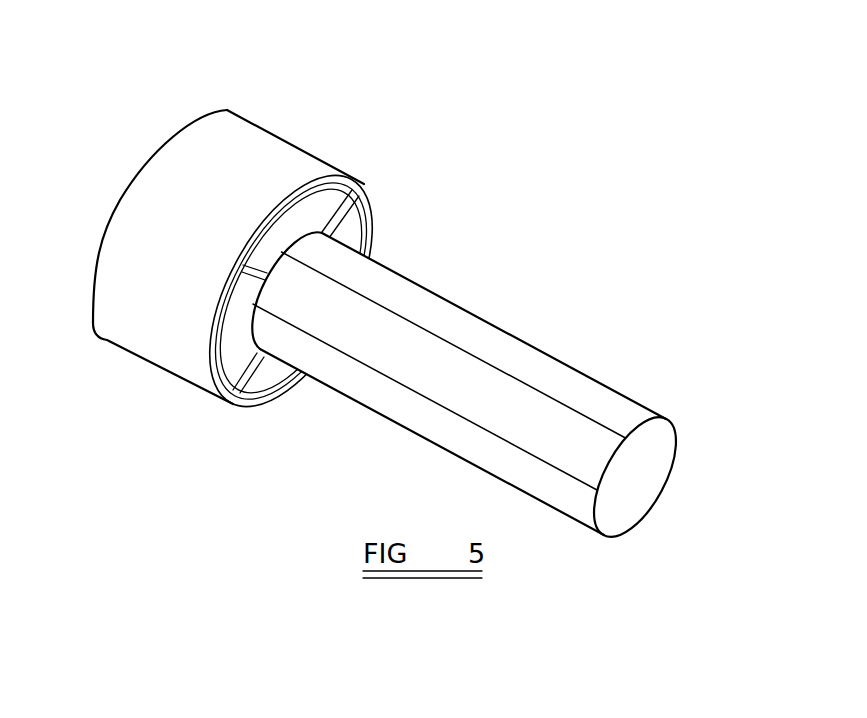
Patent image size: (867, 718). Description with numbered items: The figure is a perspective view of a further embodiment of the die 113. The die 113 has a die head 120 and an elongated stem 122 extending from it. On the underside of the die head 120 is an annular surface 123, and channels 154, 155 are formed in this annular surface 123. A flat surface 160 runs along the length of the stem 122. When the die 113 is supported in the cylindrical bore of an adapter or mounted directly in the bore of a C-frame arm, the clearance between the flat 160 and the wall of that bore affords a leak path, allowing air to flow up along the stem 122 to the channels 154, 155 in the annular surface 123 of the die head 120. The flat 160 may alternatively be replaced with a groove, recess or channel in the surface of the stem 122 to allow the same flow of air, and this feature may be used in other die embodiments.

The die 113 is at (522, 270).
The die head 120 is at (172, 150).
The stem 122 is at (658, 453).
The annular surface 123 is at (352, 177).
The channel 154 is at (255, 272).
The channel 155 is at (318, 187).
The flat surface 160 is at (587, 437).